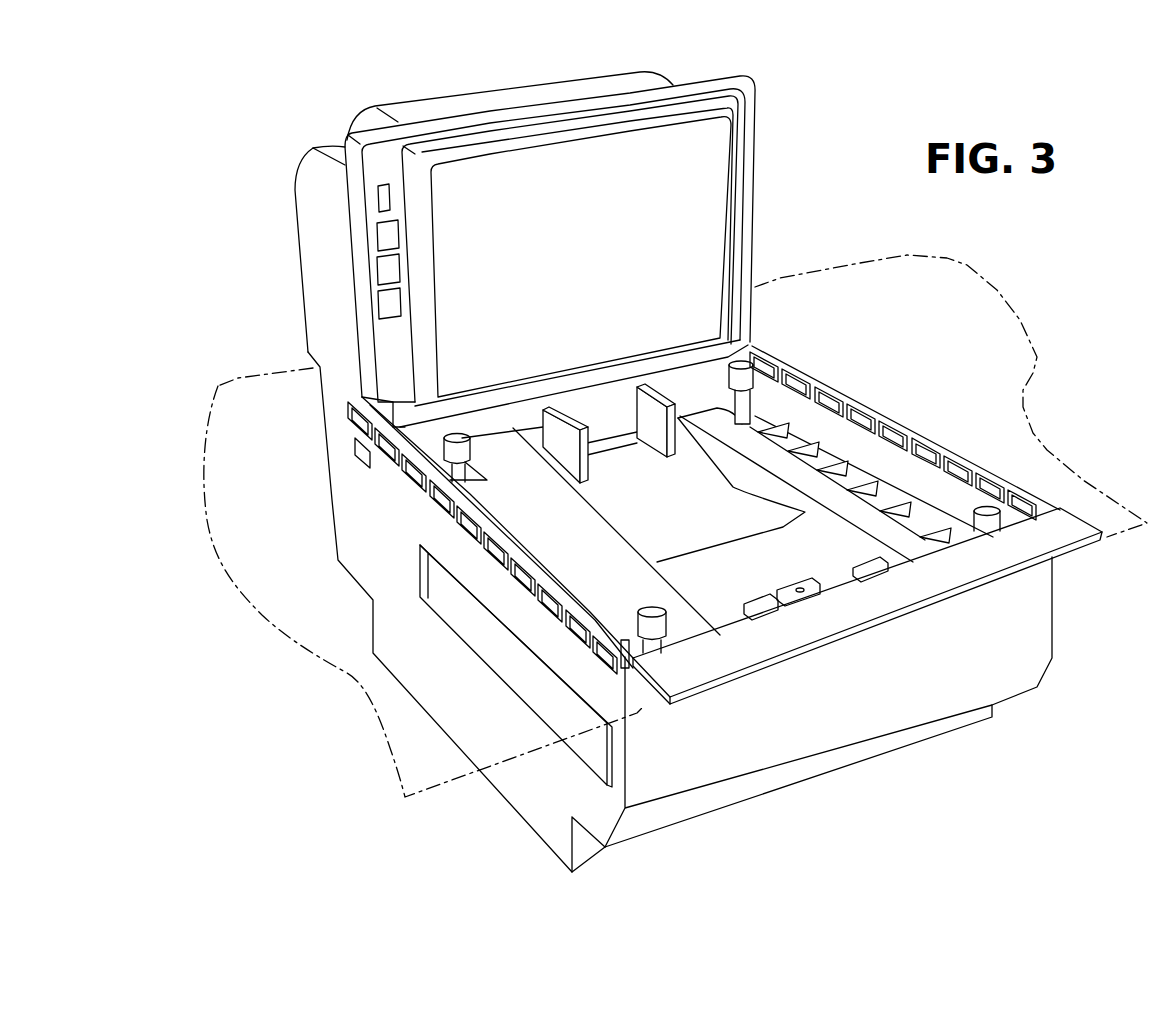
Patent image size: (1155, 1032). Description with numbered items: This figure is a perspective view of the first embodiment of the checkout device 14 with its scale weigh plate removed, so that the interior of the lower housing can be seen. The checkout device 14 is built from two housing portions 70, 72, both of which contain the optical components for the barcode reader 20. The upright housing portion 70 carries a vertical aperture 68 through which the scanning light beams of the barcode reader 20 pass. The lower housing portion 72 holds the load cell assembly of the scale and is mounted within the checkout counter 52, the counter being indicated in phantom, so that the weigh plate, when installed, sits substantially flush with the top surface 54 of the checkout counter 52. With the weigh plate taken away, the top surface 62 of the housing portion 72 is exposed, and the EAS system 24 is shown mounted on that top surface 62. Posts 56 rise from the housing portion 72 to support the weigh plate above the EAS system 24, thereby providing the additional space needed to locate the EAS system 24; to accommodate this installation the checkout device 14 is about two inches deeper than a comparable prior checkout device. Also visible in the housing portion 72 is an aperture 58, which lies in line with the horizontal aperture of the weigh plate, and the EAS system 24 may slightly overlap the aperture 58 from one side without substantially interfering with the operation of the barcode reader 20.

The checkout device 14 is at (294, 191).
The barcode reader 20 is at (298, 293).
The EAS system 24 is at (550, 523).
The checkout counter 52 is at (238, 379).
The top surface 54 is at (227, 513).
The posts 56 is at (742, 362).
The aperture 58 is at (723, 518).
The top surface 62 is at (700, 570).
The vertical aperture 68 is at (712, 178).
The housing portion 70 is at (428, 107).
The housing portion 72 is at (418, 684).